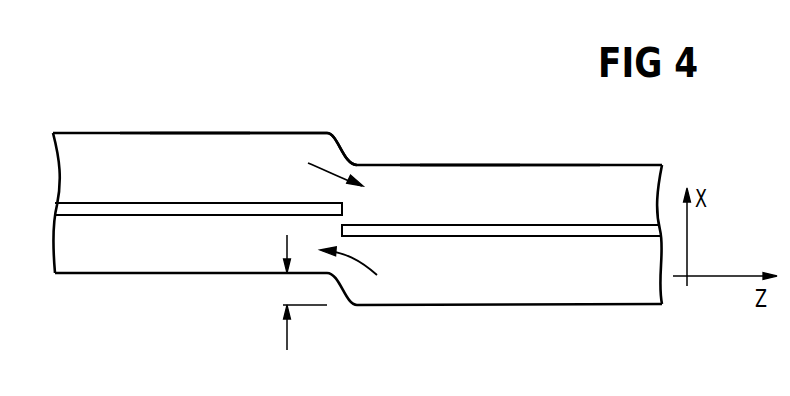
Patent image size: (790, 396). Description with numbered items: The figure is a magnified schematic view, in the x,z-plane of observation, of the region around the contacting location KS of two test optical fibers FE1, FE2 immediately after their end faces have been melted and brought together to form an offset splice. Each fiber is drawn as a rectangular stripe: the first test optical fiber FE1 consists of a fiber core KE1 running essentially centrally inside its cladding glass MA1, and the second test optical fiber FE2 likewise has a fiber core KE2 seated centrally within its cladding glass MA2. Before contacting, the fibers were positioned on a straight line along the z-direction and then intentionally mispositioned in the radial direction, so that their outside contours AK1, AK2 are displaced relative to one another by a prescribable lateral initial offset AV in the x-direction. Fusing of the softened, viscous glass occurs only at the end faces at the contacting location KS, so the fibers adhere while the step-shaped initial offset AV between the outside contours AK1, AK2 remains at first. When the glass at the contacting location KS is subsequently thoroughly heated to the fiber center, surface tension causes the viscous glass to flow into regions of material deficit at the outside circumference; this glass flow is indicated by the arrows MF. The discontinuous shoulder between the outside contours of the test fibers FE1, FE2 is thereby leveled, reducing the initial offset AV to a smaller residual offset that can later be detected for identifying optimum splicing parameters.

The cladding glass MA1 is at (100, 165).
The cladding glass MA2 is at (600, 197).
The outside contour AK1 is at (243, 133).
The outside contour AK2 is at (520, 165).
The contacting location KS is at (350, 145).
The first test optical fiber FE1 is at (188, 125).
The second test optical fiber FE2 is at (458, 158).
The fiber core KE1 is at (112, 208).
The fiber core KE2 is at (605, 232).
The glass flow arrows MF is at (320, 172).
The initial offset AV is at (290, 290).